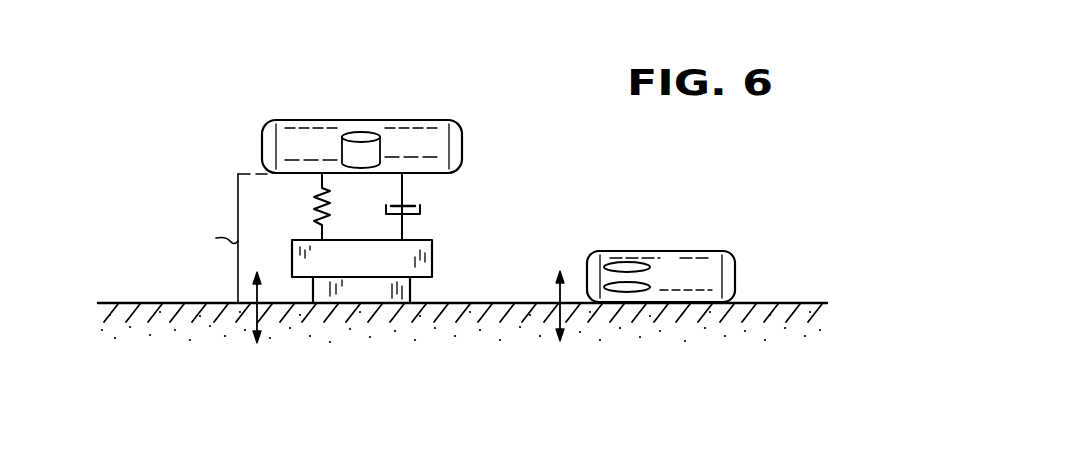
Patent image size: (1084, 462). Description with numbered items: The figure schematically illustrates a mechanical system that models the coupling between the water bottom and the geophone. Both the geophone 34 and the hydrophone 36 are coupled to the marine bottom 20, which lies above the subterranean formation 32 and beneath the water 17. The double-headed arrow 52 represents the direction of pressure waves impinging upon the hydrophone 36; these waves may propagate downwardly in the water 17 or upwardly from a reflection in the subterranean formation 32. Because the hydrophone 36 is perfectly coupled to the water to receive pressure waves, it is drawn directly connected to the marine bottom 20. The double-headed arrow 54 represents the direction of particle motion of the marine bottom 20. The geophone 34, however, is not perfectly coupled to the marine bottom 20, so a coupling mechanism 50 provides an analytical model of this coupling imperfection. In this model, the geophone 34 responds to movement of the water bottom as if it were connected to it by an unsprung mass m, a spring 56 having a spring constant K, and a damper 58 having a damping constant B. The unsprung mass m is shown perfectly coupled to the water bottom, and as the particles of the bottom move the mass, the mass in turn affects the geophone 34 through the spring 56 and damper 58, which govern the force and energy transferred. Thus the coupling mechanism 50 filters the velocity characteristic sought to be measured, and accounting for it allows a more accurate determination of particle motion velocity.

The water 17 is at (697, 174).
The marine bottom 20 is at (505, 302).
The subterranean formation 32 is at (165, 358).
The geophone 34 is at (463, 160).
The hydrophone 36 is at (668, 251).
The coupling mechanism 50 is at (229, 238).
The double-headed arrow 52 is at (556, 318).
The double-headed arrow 54 is at (250, 317).
The spring 56 is at (318, 224).
The damper 58 is at (404, 236).
The spring constant K is at (312, 203).
The damping constant B is at (420, 208).
The unsprung mass m is at (368, 268).